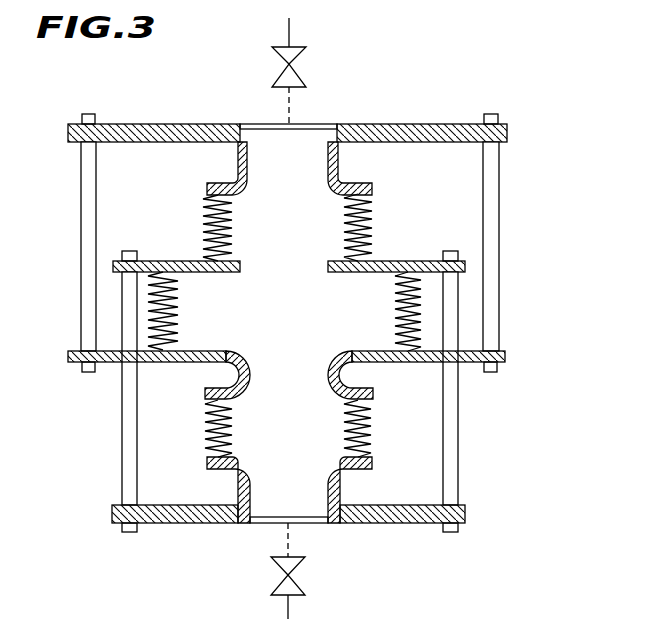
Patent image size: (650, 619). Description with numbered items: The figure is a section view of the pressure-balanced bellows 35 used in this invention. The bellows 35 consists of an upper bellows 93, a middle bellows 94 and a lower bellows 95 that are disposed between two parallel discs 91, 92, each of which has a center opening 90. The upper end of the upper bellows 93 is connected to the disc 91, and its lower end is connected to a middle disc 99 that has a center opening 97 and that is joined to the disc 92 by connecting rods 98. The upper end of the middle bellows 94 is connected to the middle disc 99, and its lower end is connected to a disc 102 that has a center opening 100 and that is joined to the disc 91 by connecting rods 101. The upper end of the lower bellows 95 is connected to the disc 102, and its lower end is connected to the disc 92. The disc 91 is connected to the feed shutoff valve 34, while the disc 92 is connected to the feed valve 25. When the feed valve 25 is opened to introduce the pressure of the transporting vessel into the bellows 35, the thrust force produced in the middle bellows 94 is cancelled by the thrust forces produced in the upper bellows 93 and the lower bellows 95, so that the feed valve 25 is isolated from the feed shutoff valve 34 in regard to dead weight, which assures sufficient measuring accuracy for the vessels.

The feed valve 25 is at (278, 585).
The feed shutoff valve 34 is at (309, 55).
The pressure-balanced bellows 35 is at (417, 124).
The center openings 90 is at (245, 124).
The disc 91 is at (457, 124).
The disc 92 is at (434, 524).
The upper bellows 93 is at (374, 227).
The middle bellows 94 is at (395, 306).
The lower bellows 95 is at (372, 446).
The center opening 97 is at (243, 262).
The connecting rods 98 is at (458, 400).
The middle disc 99 is at (177, 260).
The center opening 100 is at (330, 365).
The connecting rods 101 is at (499, 212).
The disc 102 is at (403, 363).